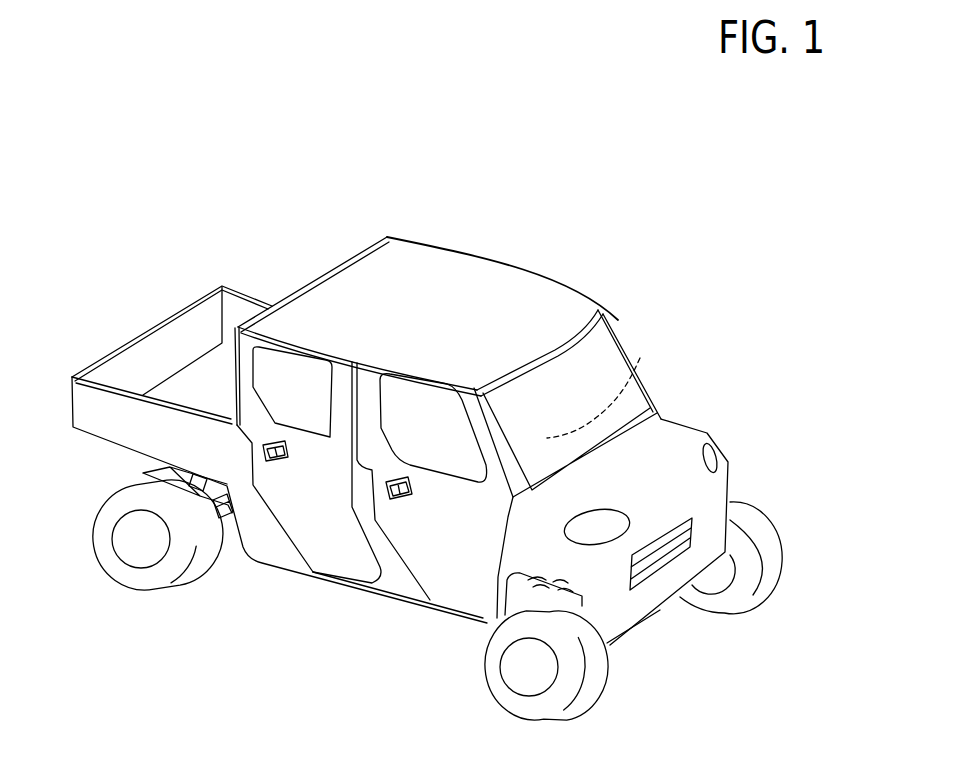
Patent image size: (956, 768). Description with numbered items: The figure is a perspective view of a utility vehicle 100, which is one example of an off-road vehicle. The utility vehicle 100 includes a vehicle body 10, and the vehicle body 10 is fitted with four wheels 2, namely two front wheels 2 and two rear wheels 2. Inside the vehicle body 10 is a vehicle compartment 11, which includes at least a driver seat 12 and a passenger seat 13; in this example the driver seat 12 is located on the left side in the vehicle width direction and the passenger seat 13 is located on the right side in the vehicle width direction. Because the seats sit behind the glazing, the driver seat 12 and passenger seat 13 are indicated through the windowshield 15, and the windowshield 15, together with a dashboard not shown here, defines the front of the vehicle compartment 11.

The utility vehicle 100 is at (266, 233).
The vehicle body 10 is at (555, 280).
The windowshield 15 is at (570, 360).
The vehicle compartment 11 is at (727, 312).
The driver seat 12 is at (640, 358).
The passenger seat 13 is at (608, 384).
The wheel 2 is at (113, 572).